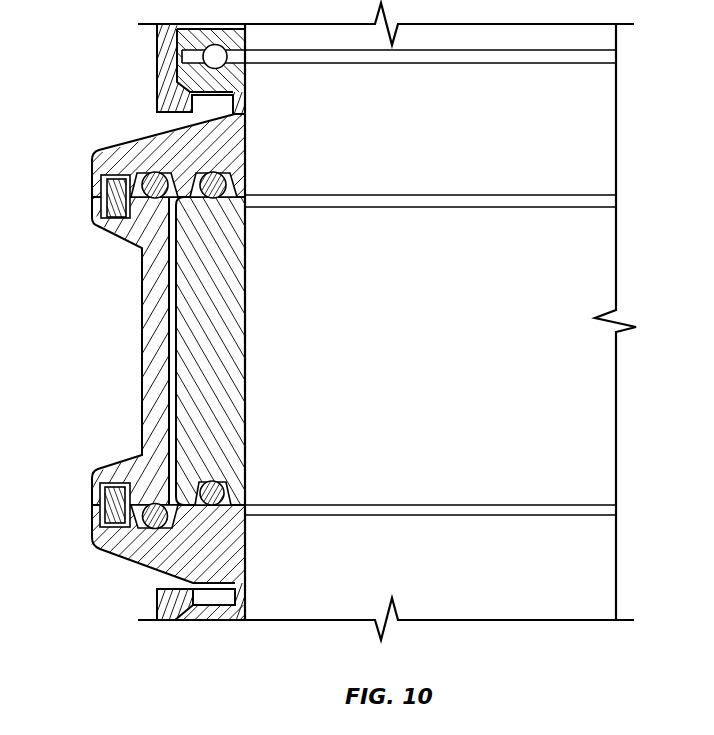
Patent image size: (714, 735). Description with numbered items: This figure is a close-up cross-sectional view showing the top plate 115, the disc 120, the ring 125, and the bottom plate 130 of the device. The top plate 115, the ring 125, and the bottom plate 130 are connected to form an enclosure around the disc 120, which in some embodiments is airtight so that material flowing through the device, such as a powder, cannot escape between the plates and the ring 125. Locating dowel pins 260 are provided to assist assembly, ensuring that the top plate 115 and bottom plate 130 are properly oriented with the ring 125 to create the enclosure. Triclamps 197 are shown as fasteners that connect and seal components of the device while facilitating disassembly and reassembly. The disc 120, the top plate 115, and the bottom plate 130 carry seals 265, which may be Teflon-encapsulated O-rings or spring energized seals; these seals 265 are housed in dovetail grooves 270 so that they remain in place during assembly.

The top plate 115 is at (130, 147).
The disc 120 is at (197, 371).
The ring 125 is at (150, 282).
The bottom plate 130 is at (175, 557).
The triclamps 197 is at (167, 72).
The locating dowel pins 260 is at (112, 190).
The seals 265 is at (214, 181).
The dovetail grooves 270 is at (233, 178).